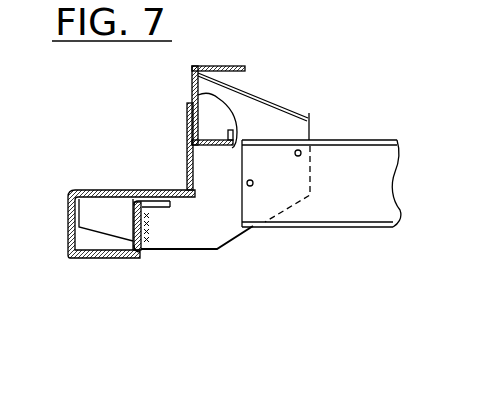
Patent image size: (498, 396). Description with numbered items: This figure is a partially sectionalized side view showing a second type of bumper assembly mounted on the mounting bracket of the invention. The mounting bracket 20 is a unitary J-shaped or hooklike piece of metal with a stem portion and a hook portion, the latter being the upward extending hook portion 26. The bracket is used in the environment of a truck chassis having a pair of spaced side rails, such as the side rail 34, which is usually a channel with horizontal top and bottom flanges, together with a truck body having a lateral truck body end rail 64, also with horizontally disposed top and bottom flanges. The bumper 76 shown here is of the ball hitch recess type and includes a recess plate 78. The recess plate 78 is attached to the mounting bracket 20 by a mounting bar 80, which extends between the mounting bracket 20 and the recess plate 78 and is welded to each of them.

The mounting bracket 20 is at (225, 229).
The upward extending hook portion 26 is at (292, 128).
The side rail 34 is at (368, 209).
The truck body end rail 64 is at (223, 65).
The bumper 76 is at (70, 200).
The recess plate 78 is at (142, 253).
The mounting bar 80 is at (152, 222).